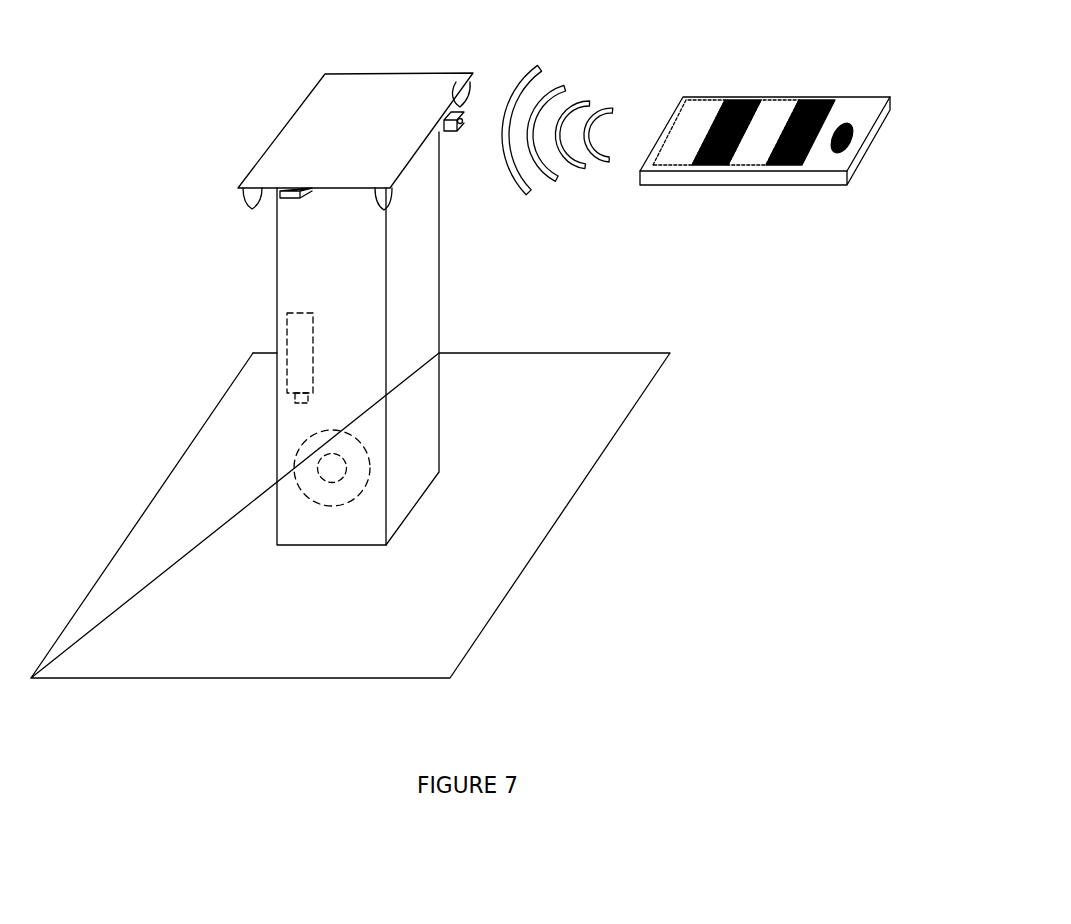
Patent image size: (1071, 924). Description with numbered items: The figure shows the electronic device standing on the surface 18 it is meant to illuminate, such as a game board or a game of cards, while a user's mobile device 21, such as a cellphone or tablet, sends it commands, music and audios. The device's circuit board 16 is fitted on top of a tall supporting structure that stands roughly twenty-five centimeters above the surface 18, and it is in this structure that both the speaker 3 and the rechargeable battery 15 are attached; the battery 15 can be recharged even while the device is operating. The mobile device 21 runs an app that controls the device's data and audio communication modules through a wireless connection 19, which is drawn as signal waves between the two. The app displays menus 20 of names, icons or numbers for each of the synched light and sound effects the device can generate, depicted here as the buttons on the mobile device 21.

The speaker 3 is at (309, 470).
The rechargeable battery 15 is at (303, 333).
The circuit board 16 is at (323, 105).
The surface 18 is at (545, 508).
The wireless connection 19 is at (573, 92).
The menus 20 is at (805, 101).
The user's mobile device 21 is at (860, 107).